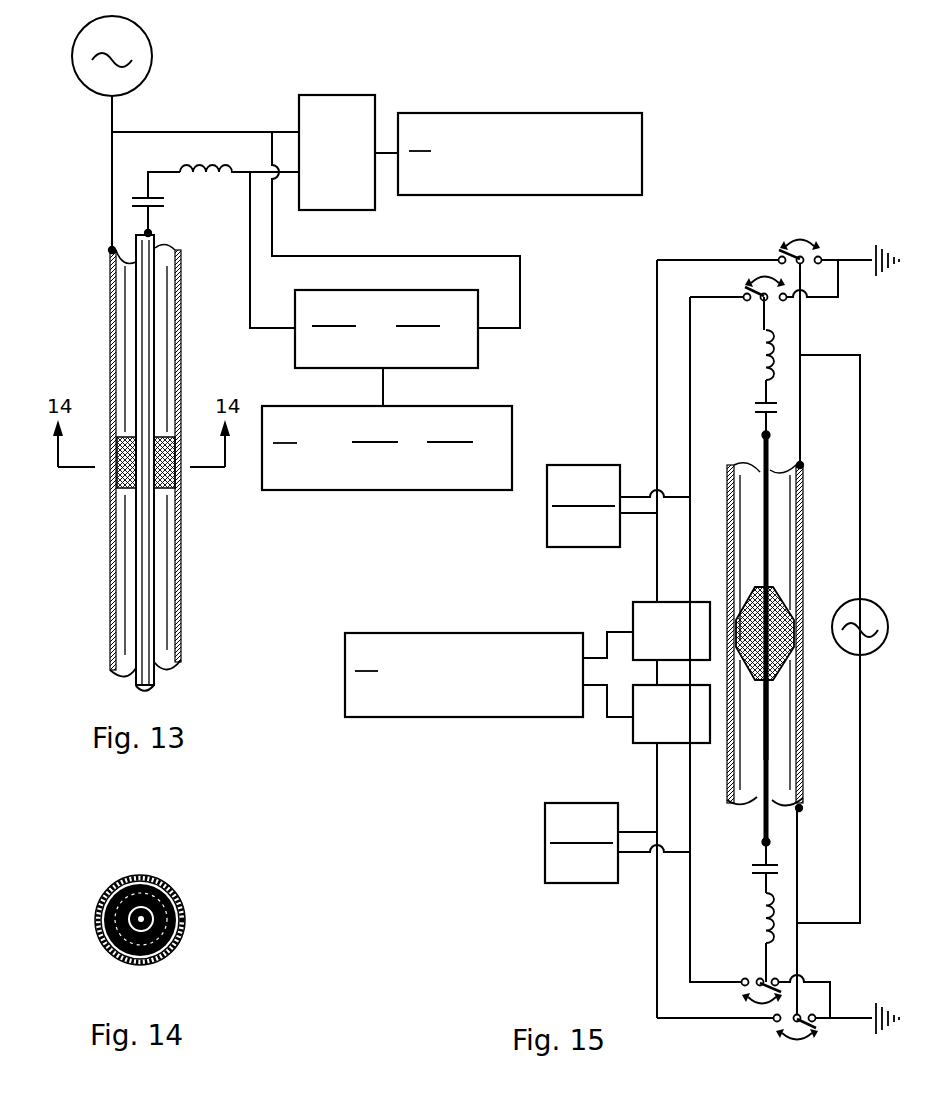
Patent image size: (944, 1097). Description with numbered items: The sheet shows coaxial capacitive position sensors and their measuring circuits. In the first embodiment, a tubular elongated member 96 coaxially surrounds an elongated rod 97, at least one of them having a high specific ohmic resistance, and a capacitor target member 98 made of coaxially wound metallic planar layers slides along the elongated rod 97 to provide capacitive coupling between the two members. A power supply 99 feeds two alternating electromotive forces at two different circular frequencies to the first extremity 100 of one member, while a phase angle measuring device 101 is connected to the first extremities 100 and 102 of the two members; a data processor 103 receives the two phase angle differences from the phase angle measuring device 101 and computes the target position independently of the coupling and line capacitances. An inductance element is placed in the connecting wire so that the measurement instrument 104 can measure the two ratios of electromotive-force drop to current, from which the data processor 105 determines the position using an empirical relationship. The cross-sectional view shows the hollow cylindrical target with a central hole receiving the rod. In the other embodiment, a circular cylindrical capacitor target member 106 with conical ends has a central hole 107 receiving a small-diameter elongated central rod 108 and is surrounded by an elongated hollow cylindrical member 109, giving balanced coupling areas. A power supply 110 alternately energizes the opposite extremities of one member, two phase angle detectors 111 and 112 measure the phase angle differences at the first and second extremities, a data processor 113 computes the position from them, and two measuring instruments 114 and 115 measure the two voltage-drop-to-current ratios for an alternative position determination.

In FIG. 13, the power supply 99 is at (152, 58).
In FIG. 13, the first extremity 100 is at (112, 250).
In FIG. 13, the first extremity 102 is at (150, 231).
In FIG. 13, the capacitor target member 98 is at (163, 492).
In FIG. 13, the tubular elongated member 96 is at (110, 617).
In FIG. 13, the elongated rod 97 is at (152, 607).
In FIG. 13, the phase angle measuring device 101 is at (337, 95).
In FIG. 13, the data processor 103 is at (535, 113).
In FIG. 13, the measurement instrument 104 is at (478, 352).
In FIG. 13, the data processor 105 is at (383, 490).
In FIG. 15, the capacitor target member 106 is at (780, 665).
In FIG. 15, the central hole 107 is at (770, 686).
In FIG. 15, the elongated central rod 108 is at (762, 812).
In FIG. 15, the elongated hollow cylindrical member 109 is at (802, 792).
In FIG. 15, the power supply 110 is at (888, 604).
In FIG. 15, the phase angle detector 111 is at (633, 612).
In FIG. 15, the phase angle detector 112 is at (633, 738).
In FIG. 15, the data processor 113 is at (455, 717).
In FIG. 15, the measuring instrument 114 is at (547, 530).
In FIG. 15, the measuring instrument 115 is at (545, 805).